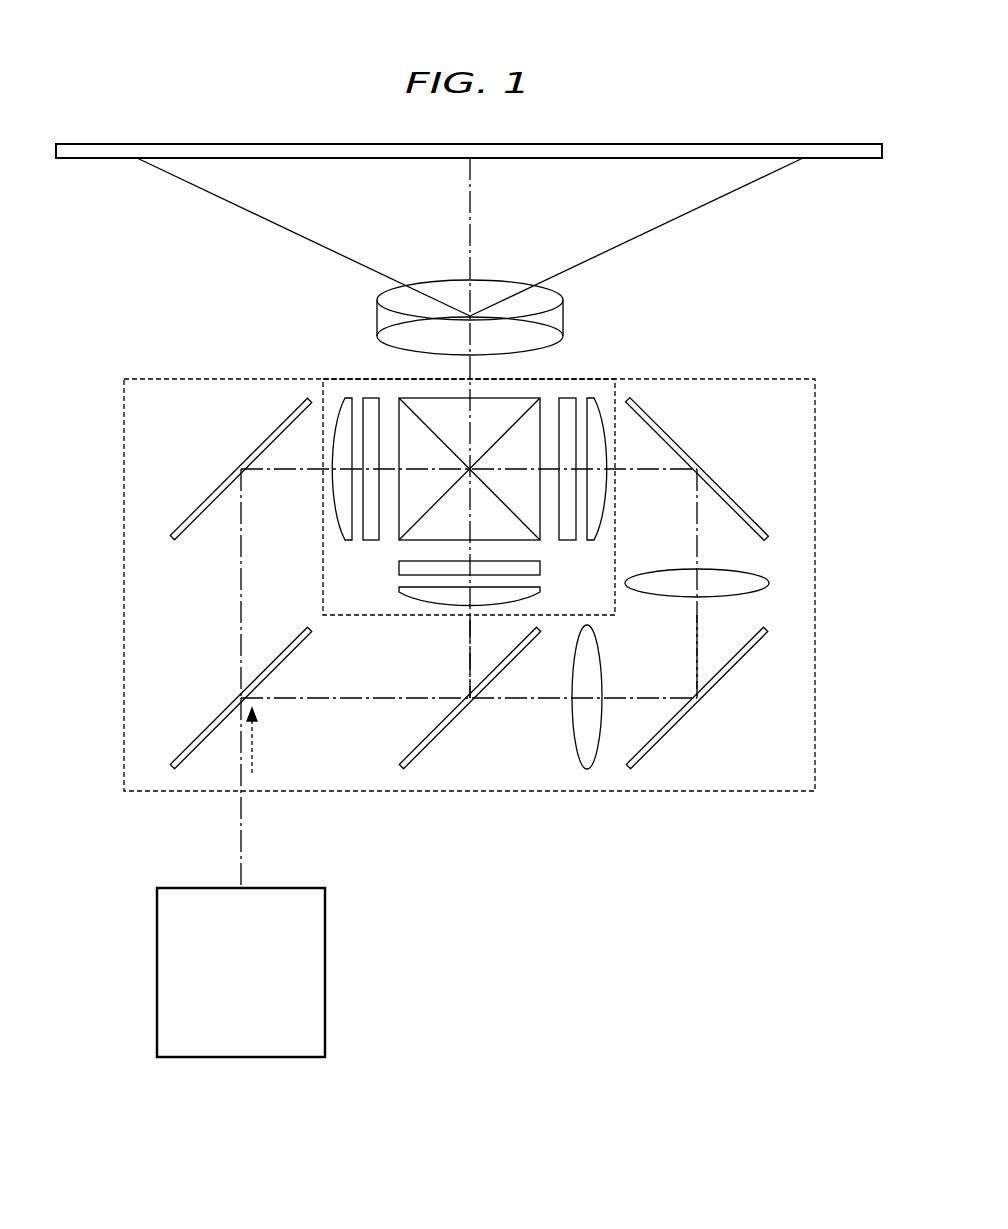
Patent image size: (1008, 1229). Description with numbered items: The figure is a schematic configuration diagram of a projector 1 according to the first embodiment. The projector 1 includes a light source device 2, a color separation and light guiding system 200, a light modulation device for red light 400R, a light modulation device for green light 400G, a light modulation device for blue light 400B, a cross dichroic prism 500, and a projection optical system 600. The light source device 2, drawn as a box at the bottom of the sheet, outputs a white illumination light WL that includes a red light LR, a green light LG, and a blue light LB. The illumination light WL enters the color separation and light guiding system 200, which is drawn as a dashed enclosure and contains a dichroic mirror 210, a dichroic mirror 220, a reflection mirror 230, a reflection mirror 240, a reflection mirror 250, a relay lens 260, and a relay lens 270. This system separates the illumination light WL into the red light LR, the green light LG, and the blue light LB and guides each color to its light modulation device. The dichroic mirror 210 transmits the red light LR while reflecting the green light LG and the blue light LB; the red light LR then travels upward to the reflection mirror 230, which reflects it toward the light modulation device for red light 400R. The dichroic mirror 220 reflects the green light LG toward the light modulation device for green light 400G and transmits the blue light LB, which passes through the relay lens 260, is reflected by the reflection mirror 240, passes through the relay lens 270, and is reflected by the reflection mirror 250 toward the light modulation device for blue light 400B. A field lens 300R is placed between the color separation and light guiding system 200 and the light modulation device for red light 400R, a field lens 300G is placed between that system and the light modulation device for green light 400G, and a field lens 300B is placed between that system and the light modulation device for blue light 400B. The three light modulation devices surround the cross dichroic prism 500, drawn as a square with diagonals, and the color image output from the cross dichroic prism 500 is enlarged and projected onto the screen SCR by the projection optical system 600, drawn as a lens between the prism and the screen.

The projector 1 is at (819, 357).
The light source device 2 is at (325, 912).
The color separation and light guiding system 200 is at (124, 527).
The dichroic mirror 210 is at (203, 728).
The dichroic mirror 220 is at (445, 733).
The reflection mirror 230 is at (215, 485).
The reflection mirror 240 is at (723, 683).
The reflection mirror 250 is at (727, 488).
The relay lens 260 is at (572, 720).
The relay lens 270 is at (760, 578).
The field lens 300R is at (343, 397).
The field lens 300G is at (405, 590).
The field lens 300B is at (593, 397).
The light modulation device for red light 400R is at (371, 397).
The light modulation device for green light 400G is at (403, 570).
The light modulation device for blue light 400B is at (566, 397).
The cross dichroic prism 500 is at (483, 403).
The projection optical system 600 is at (451, 292).
The screen SCR is at (848, 160).
The red light LR is at (241, 607).
The green light LG is at (470, 652).
The blue light LB is at (697, 643).
The illumination light WL is at (252, 752).